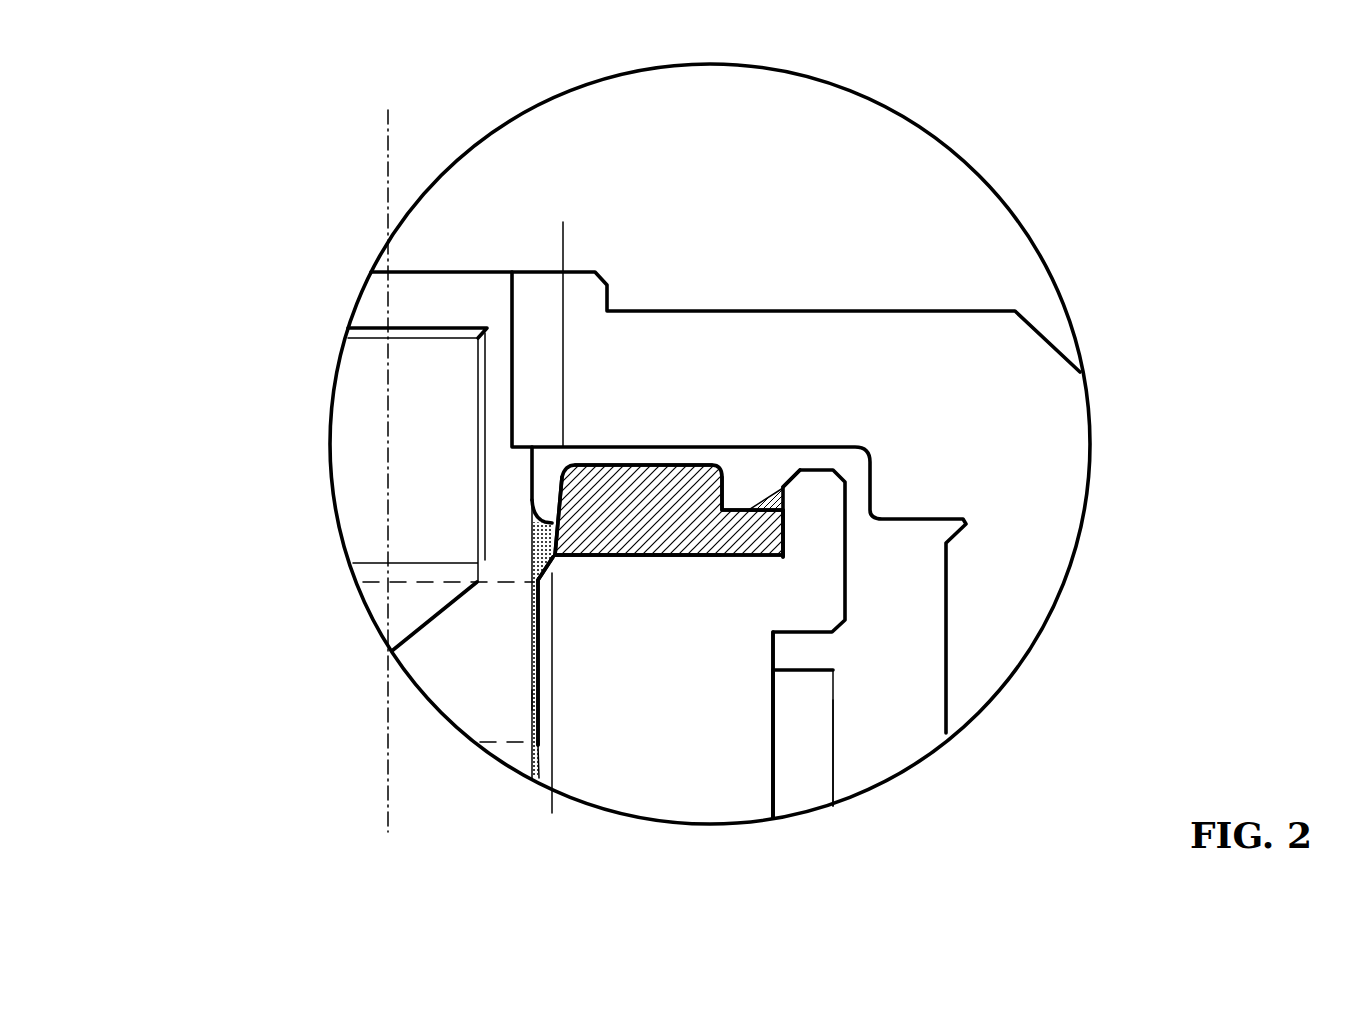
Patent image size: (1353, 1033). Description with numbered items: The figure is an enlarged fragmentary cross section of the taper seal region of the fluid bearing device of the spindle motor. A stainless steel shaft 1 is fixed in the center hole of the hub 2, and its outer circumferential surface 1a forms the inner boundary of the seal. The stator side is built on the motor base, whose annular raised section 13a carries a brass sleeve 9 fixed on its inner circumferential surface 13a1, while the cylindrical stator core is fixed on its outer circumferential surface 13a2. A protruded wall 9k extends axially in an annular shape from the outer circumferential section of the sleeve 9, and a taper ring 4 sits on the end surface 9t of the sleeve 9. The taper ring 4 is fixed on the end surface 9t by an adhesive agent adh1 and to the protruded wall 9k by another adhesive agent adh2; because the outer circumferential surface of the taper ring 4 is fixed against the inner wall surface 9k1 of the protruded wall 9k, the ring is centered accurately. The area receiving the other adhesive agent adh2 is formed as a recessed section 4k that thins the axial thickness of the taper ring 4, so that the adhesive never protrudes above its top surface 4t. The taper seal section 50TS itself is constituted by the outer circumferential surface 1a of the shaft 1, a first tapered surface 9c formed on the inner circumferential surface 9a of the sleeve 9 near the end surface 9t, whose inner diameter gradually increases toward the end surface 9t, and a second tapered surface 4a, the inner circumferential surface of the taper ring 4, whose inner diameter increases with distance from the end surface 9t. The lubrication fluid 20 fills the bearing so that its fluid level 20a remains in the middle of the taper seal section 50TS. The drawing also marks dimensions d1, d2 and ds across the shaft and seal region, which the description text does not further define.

The shaft 1 is at (477, 638).
The outer circumferential surface 1a is at (527, 497).
The hub 2 is at (983, 333).
The taper ring 4 is at (688, 497).
The second tapered surface 4a is at (565, 498).
The top surface 4t is at (658, 465).
The recessed section 4k is at (730, 510).
The sleeve 9 is at (705, 778).
The inner circumferential surface 9a is at (540, 717).
The first tapered surface 9c is at (547, 573).
The end surface 9t is at (605, 558).
The protruded wall 9k is at (823, 528).
The inner wall surface 9k1 is at (790, 490).
The raised section 13a is at (802, 685).
The inner circumferential surface 13a1 is at (777, 732).
The outer circumferential surface 13a2 is at (835, 765).
The lubrication fluid 20 is at (538, 547).
The fluid level 20a is at (542, 533).
The taper seal section 50TS is at (547, 483).
The adhesive agent adh1 is at (787, 556).
The other adhesive agent adh2 is at (762, 485).
The diameter d1 is at (550, 807).
The diameter d2 is at (562, 228).
The shaft diameter ds is at (529, 700).